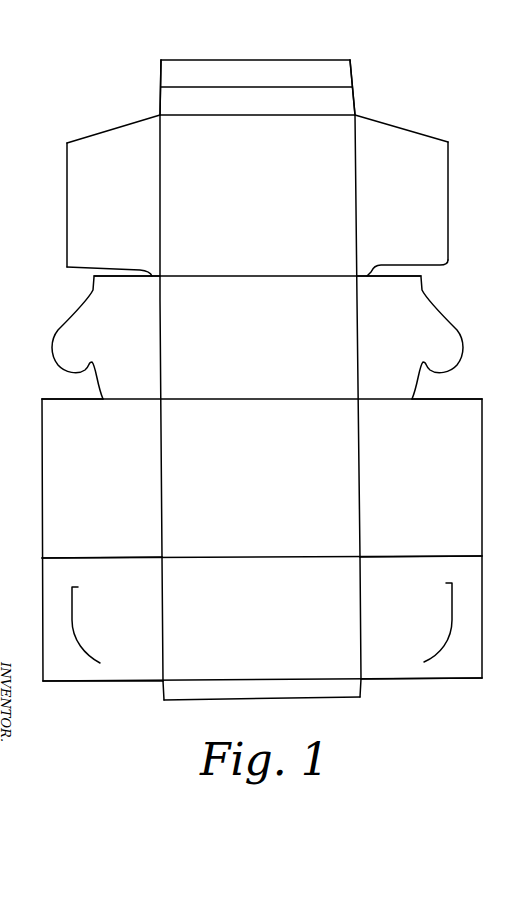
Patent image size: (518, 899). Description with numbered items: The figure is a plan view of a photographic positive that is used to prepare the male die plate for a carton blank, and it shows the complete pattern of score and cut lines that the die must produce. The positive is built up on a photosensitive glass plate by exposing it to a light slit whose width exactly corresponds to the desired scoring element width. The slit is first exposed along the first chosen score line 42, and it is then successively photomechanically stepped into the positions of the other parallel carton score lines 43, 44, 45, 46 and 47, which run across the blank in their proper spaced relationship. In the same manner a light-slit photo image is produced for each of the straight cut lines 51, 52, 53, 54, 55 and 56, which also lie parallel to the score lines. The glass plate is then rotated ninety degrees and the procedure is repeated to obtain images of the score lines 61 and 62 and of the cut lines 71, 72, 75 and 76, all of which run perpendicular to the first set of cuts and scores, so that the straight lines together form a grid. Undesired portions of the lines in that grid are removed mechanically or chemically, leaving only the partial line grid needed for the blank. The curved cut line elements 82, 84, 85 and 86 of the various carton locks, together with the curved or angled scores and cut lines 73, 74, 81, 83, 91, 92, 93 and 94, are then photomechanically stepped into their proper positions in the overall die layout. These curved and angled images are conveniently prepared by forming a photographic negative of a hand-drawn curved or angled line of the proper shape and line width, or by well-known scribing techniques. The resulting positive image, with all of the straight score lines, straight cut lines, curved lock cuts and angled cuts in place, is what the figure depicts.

The score line 42 is at (284, 679).
The score line 43 is at (285, 557).
The score line 44 is at (246, 399).
The score line 45 is at (270, 276).
The score line 46 is at (233, 117).
The score line 47 is at (257, 87).
The straight cut line 51 is at (318, 698).
The straight cut line 52 is at (102, 680).
The straight cut line 53 is at (117, 558).
The straight cut line 54 is at (57, 399).
The straight cut line 55 is at (110, 279).
The straight cut line 56 is at (310, 60).
The score line 61 is at (360, 618).
The score line 62 is at (163, 603).
The cut line 71 is at (482, 470).
The cut line 72 is at (448, 203).
The cut line 73 is at (354, 85).
The cut line 74 is at (161, 93).
The cut line 75 is at (67, 210).
The cut line 76 is at (42, 467).
The cut line 81 is at (126, 270).
The curved cut line element 82 is at (80, 307).
The cut line 83 is at (415, 247).
The curved cut line element 84 is at (451, 302).
The curved cut line element 85 is at (73, 605).
The curved cut line element 86 is at (452, 618).
The cut line 91 is at (118, 128).
The cut line 92 is at (395, 127).
The cut line 93 is at (163, 697).
The cut line 94 is at (360, 690).